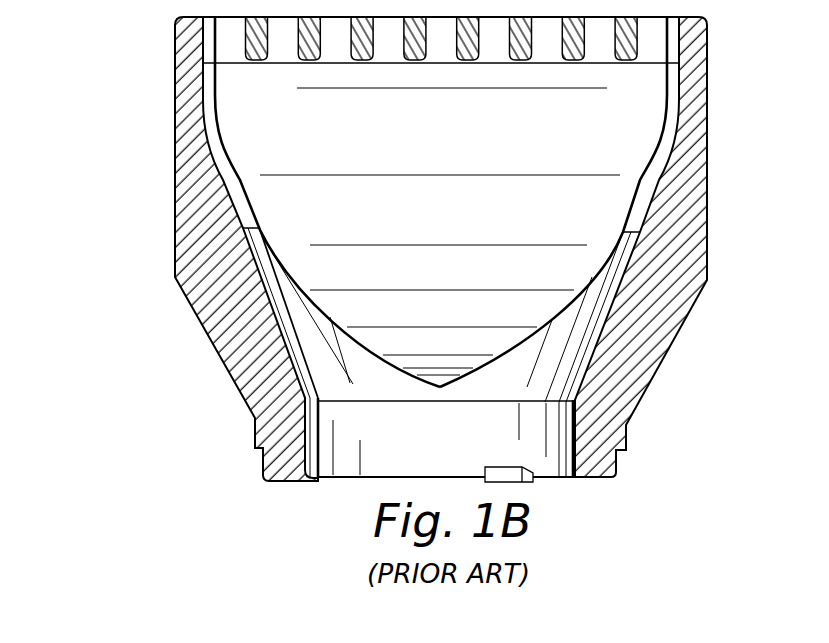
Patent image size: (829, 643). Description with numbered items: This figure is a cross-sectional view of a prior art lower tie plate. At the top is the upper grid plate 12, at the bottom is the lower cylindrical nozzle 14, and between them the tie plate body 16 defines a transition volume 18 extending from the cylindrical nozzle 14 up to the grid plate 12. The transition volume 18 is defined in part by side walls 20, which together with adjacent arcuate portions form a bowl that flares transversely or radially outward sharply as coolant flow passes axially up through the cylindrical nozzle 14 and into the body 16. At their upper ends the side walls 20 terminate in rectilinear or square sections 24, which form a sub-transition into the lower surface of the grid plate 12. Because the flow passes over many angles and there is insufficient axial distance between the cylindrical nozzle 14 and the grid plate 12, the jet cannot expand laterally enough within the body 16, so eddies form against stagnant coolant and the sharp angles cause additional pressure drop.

The upper grid plate 12 is at (523, 50).
The lower cylindrical nozzle 14 is at (562, 441).
The tie plate body 16 is at (705, 113).
The transition volume 18 is at (598, 213).
The side walls 20 is at (232, 160).
The rectilinear or square sections 24 is at (263, 64).